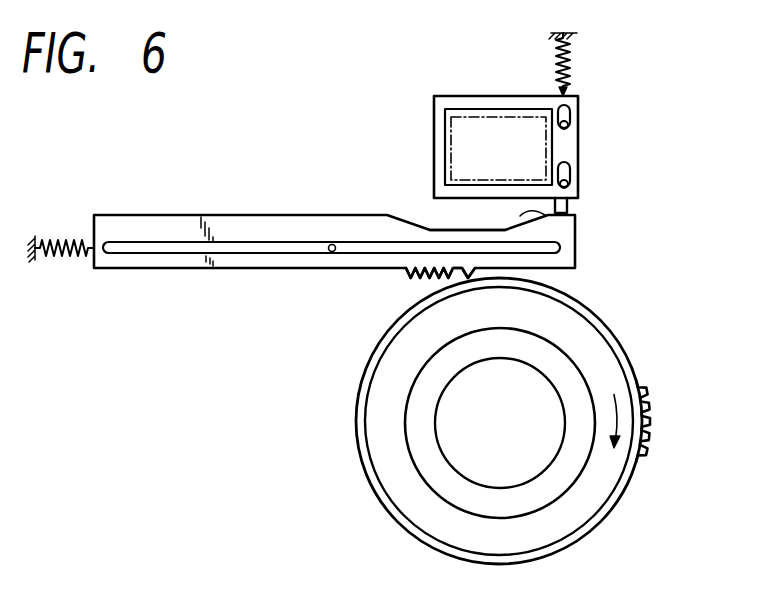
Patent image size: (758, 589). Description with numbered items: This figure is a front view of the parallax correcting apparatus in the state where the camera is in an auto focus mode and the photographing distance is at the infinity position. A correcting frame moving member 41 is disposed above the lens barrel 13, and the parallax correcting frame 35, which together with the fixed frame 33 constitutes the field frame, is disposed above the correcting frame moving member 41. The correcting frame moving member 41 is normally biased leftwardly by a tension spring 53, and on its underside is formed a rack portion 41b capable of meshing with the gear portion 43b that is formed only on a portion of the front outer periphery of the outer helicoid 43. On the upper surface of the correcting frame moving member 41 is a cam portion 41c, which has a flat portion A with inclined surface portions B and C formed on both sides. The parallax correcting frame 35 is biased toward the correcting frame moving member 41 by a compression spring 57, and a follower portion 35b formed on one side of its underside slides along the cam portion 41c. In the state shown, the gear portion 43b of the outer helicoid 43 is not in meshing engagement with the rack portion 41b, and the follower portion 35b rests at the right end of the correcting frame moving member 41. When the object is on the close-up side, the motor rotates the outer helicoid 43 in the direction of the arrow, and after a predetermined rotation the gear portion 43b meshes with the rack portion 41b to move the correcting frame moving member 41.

The lens barrel 13 is at (422, 446).
The fixed frame 33 is at (447, 133).
The parallax correcting frame 35 is at (578, 136).
The follower portion 35b is at (568, 206).
The correcting frame moving member 41 is at (251, 214).
The rack portion 41b is at (412, 281).
The cam portion 41c is at (462, 227).
The outer helicoid 43 is at (605, 497).
The gear portion 43b is at (651, 404).
The tension spring 53 is at (62, 240).
The compression spring 57 is at (566, 72).
The flat portion A is at (446, 230).
The inclined surface portion B is at (522, 218).
The inclined surface portion C is at (397, 217).